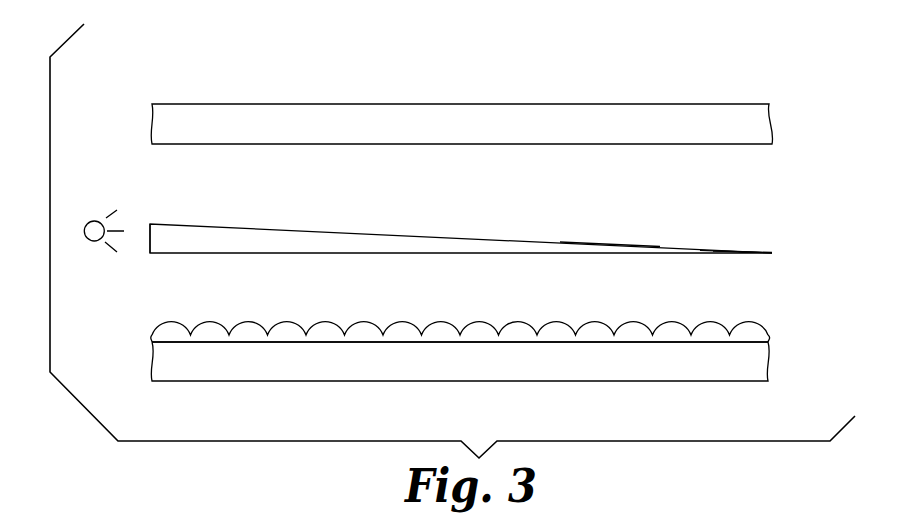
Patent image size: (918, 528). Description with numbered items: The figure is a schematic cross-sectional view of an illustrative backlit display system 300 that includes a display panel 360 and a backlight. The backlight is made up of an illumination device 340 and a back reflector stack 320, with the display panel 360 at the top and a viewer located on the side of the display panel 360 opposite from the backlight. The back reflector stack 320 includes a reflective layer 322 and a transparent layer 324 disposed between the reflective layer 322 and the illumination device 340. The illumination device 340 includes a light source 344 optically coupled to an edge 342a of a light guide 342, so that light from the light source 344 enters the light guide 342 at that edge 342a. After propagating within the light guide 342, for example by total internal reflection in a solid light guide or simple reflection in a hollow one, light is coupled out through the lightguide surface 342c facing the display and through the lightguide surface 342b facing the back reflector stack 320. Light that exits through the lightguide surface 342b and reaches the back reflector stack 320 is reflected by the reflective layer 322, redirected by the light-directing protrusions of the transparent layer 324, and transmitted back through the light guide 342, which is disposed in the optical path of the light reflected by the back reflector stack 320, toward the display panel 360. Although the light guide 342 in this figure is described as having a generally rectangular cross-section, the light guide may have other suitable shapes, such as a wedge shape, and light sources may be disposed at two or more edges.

The backlit display system 300 is at (670, 67).
The display panel 360 is at (756, 90).
The illumination device 340 is at (761, 202).
The light guide 342 is at (400, 242).
The edge of light guide 342a is at (150, 243).
The lightguide surface facing the back reflector stack 342b is at (713, 251).
The lightguide surface facing the display 342c is at (610, 244).
The light source 344 is at (94, 219).
The back reflector stack 320 is at (505, 358).
The reflective layer 322 is at (557, 368).
The transparent layer 324 is at (599, 322).